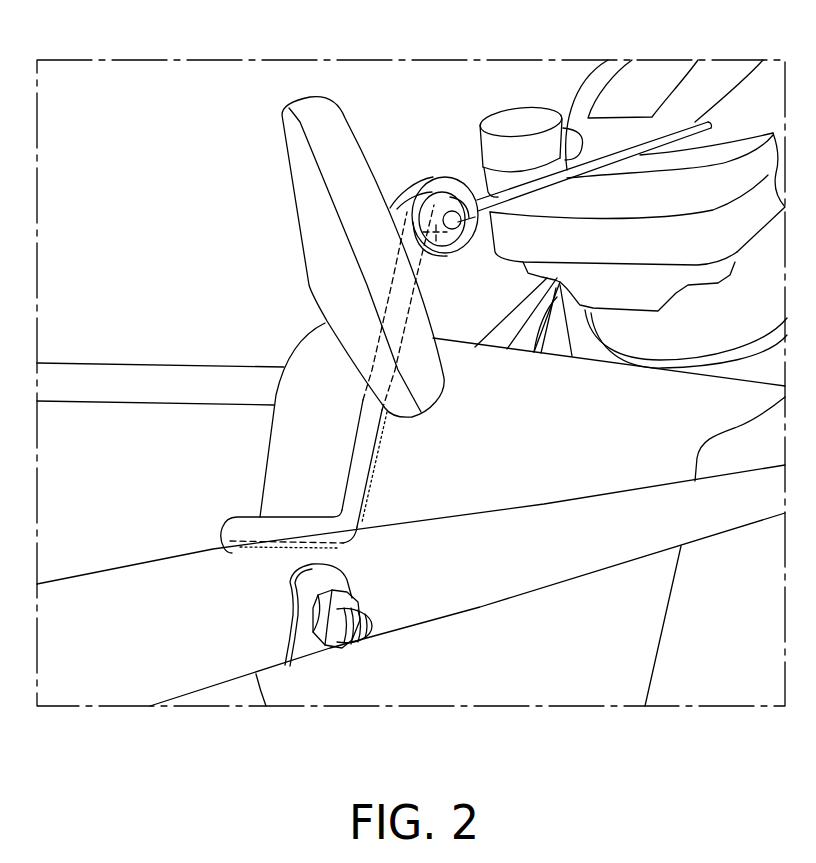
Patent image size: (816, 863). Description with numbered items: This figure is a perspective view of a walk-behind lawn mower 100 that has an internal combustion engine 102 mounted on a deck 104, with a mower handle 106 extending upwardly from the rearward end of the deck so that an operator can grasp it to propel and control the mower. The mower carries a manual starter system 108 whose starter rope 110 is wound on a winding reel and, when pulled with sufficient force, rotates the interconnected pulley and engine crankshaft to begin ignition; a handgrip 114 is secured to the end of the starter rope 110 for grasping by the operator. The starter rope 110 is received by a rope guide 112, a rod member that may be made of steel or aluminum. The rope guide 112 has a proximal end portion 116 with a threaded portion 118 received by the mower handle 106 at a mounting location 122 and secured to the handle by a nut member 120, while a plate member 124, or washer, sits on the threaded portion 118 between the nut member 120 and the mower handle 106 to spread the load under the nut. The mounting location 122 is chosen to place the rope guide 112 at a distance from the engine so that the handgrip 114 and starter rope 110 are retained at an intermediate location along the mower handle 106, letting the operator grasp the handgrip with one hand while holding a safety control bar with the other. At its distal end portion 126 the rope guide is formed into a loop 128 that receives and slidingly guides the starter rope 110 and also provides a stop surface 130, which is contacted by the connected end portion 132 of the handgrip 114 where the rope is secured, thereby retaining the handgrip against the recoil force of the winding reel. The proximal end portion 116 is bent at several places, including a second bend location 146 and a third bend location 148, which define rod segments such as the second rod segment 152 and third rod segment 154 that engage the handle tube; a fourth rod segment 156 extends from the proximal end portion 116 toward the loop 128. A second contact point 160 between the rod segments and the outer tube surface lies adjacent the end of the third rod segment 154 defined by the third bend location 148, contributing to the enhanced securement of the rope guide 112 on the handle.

The walk-behind lawn mower 100 is at (259, 316).
The internal combustion engine 102 is at (605, 74).
The deck 104 is at (500, 318).
The mower handle 106 is at (114, 720).
The manual starter system 108 is at (323, 215).
The starter rope 110 is at (657, 136).
The rope guide 112 is at (352, 465).
The handgrip 114 is at (288, 139).
The proximal end portion 116 is at (207, 549).
The threaded portion 118 is at (371, 631).
The nut member 120 is at (357, 600).
The mounting location 122 is at (317, 680).
The plate member 124 is at (348, 575).
The distal end portion 126 is at (414, 188).
The loop 128 is at (449, 180).
The stop surface 130 is at (462, 234).
The connected end portion 132 is at (460, 245).
The second bend location 146 is at (236, 518).
The third bend location 148 is at (335, 517).
The second rod segment 152 is at (233, 556).
The third rod segment 154 is at (289, 516).
The fourth rod segment 156 is at (362, 408).
The second contact point 160 is at (350, 538).